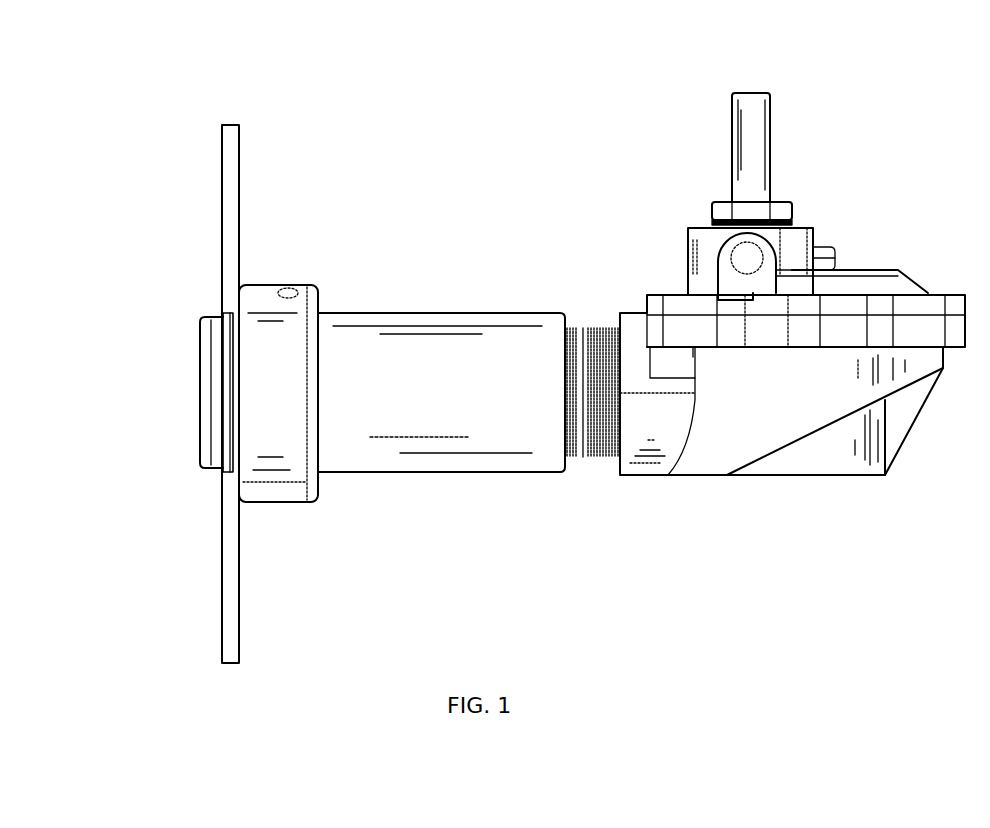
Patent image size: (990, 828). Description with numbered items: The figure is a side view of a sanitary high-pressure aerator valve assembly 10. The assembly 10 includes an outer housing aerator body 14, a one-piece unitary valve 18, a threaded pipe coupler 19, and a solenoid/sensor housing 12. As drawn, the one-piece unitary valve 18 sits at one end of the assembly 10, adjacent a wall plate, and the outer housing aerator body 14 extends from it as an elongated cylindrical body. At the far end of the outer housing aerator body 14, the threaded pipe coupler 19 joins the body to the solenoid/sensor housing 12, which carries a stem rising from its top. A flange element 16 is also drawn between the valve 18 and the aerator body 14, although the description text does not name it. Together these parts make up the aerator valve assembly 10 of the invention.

The sanitary high-pressure aerator valve assembly 10 is at (535, 134).
The solenoid/sensor housing 12 is at (886, 270).
The outer housing aerator body 14 is at (398, 473).
The escutcheon flange 16 is at (277, 507).
The one-piece unitary valve 18 is at (200, 380).
The threaded pipe coupler 19 is at (582, 322).